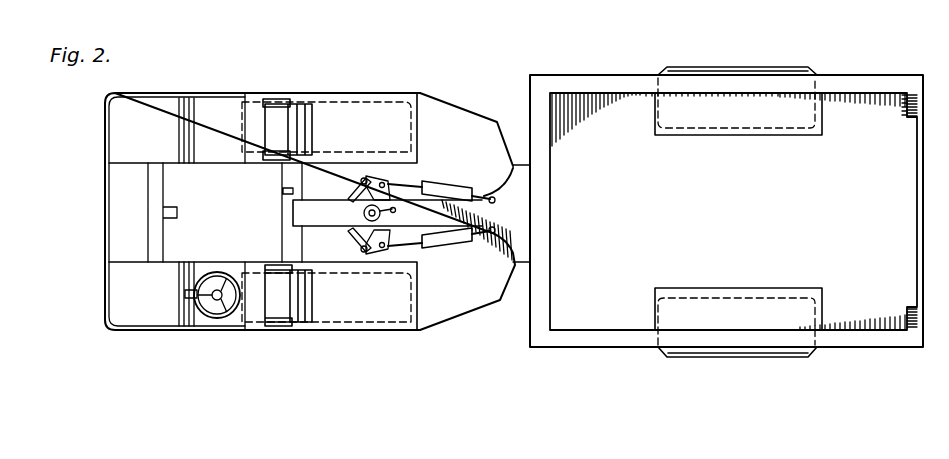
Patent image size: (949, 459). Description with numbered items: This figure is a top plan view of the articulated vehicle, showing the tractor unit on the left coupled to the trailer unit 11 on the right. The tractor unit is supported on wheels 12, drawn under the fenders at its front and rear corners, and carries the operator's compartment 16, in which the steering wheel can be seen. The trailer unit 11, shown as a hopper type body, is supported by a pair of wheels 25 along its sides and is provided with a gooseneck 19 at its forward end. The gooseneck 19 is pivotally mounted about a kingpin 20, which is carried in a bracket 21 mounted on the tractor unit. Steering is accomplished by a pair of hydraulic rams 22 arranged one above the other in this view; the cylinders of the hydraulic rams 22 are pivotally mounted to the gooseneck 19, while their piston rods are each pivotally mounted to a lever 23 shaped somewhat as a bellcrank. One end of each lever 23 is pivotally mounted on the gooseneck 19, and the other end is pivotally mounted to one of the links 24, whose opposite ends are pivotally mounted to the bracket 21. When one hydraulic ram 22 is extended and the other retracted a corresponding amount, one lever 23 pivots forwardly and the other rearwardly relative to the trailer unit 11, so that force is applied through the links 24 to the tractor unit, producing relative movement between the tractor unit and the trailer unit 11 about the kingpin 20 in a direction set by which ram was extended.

The trailer unit 11 is at (612, 77).
The wheels 12 is at (258, 93).
The operator's compartment 16 is at (235, 272).
The gooseneck 19 is at (446, 213).
The kingpin 20 is at (393, 212).
The bracket 21 is at (322, 222).
The hydraulic rams 22 is at (438, 182).
The lever 23 is at (380, 177).
The links 24 is at (352, 192).
The wheels 25 is at (716, 67).